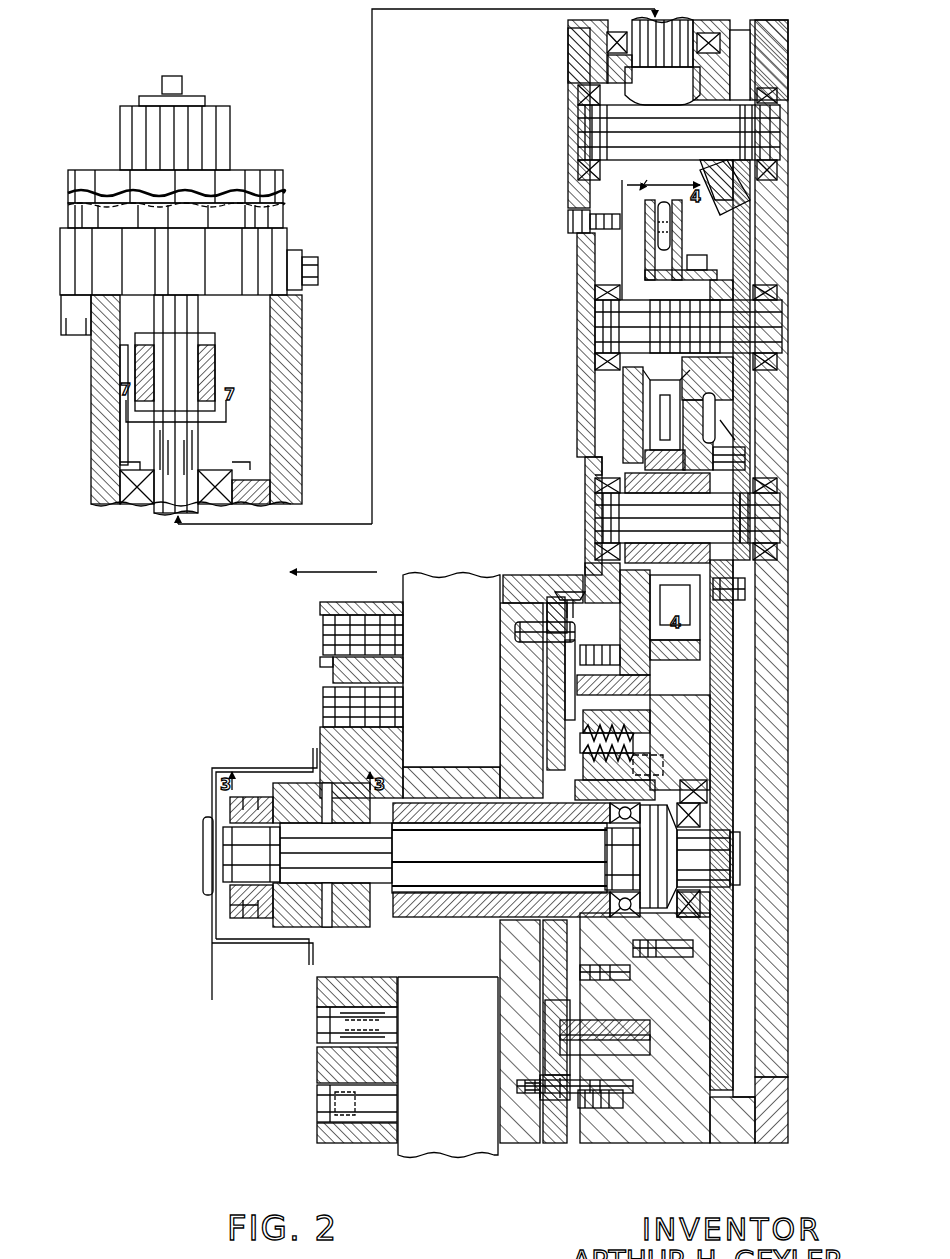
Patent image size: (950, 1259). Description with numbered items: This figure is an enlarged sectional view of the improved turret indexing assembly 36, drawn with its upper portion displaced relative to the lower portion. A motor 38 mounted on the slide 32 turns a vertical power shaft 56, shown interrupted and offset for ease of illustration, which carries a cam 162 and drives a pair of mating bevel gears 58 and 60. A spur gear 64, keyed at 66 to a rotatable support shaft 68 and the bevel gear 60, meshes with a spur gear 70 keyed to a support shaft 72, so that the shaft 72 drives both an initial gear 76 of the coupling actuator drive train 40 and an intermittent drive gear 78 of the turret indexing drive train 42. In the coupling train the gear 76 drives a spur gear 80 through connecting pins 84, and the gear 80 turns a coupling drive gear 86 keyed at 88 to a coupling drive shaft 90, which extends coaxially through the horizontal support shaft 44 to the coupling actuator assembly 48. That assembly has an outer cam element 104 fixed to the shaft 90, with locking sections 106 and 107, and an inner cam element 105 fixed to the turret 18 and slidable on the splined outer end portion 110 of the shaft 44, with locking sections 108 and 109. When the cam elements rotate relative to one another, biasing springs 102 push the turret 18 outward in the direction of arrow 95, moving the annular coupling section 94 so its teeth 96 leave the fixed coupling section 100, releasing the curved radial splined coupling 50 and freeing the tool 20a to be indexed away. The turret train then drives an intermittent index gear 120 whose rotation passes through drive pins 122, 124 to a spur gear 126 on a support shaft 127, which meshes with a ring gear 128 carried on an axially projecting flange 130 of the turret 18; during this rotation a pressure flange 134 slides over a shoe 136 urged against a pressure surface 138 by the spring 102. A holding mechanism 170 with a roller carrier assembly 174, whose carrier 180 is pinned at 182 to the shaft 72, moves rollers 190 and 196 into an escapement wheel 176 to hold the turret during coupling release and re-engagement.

The turret 18 is at (215, 1047).
The tool 20a is at (415, 1145).
The slide 32 is at (95, 414).
The turret indexing assembly 36 is at (108, 70).
The motor 38 is at (282, 200).
The coupling actuator drive train 40 is at (760, 448).
The turret indexing drive train 42 is at (605, 462).
The horizontal support shaft 44 is at (430, 960).
The coupling actuator assembly 48 is at (213, 940).
The curved radial splined coupling 50 is at (560, 565).
The power shaft 56 is at (190, 302).
The bevel gear 58 is at (760, 45).
The bevel gear 60 is at (755, 62).
The spur gear 64 is at (745, 215).
The key 66 is at (765, 120).
The rotatable support shaft 68 is at (770, 137).
The spur gear 70 is at (745, 270).
The support shaft 72 is at (770, 333).
The initial gear 76 is at (765, 497).
The intermittent drive gear 78 is at (740, 375).
The spur gear 80 is at (745, 618).
The connecting pins 84 is at (748, 588).
The coupling drive gear 86 is at (755, 477).
The key 88 is at (705, 895).
The coupling drive shaft 90 is at (740, 858).
The annular coupling section 94 is at (553, 603).
The arrow 95 is at (370, 572).
The teeth 96 is at (515, 636).
The fixed coupling section 100 is at (580, 650).
The biasing springs 102 is at (650, 738).
The outer cam element 104 is at (318, 775).
The inner cam element 105 is at (372, 790).
The locking section 106 is at (318, 765).
The locking section 107 is at (322, 925).
The locking section 108 is at (380, 740).
The locking section 109 is at (320, 927).
The splined outer end portion 110 is at (360, 823).
The intermittent index gear 120 is at (690, 430).
The drive pin 122 is at (655, 488).
The drive pin 124 is at (648, 563).
The spur gear 126 is at (630, 375).
The support shaft 127 is at (770, 533).
The ring gear 128 is at (648, 686).
The axially projecting flange 130 is at (548, 700).
The pressure flange 134 is at (580, 745).
The shoe 136 is at (575, 786).
The pressure surface 138 is at (565, 716).
The cam 162 is at (212, 378).
The holding mechanism 170 is at (640, 435).
The roller carrier assembly 174 is at (575, 212).
The escapement wheel 176 is at (572, 592).
The carrier 180 is at (645, 258).
The pin 182 is at (685, 300).
The roller 190 is at (665, 200).
The roller 196 is at (712, 400).